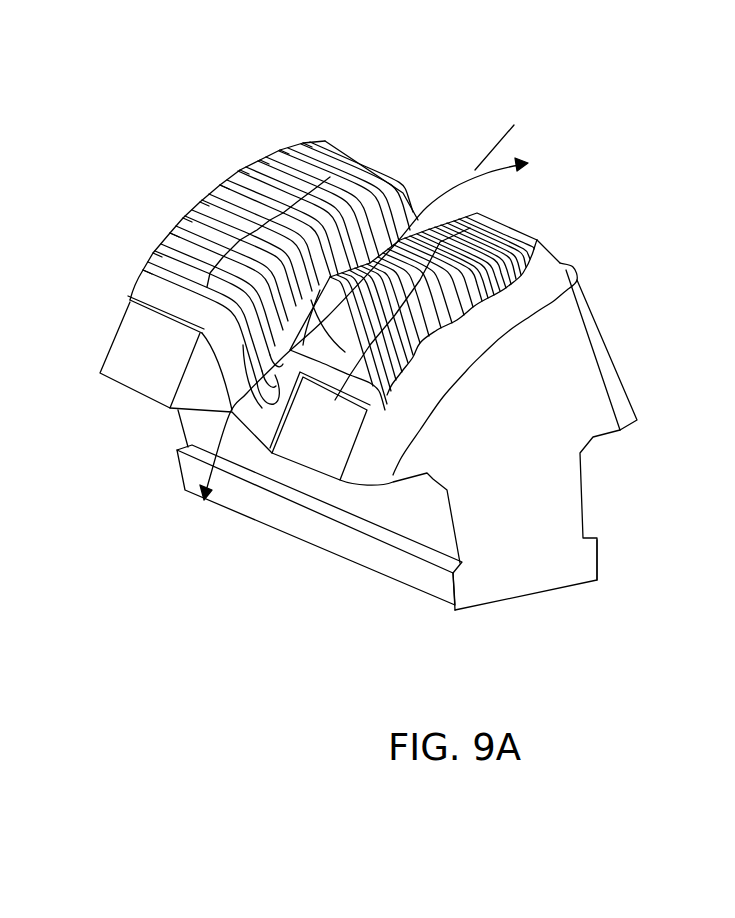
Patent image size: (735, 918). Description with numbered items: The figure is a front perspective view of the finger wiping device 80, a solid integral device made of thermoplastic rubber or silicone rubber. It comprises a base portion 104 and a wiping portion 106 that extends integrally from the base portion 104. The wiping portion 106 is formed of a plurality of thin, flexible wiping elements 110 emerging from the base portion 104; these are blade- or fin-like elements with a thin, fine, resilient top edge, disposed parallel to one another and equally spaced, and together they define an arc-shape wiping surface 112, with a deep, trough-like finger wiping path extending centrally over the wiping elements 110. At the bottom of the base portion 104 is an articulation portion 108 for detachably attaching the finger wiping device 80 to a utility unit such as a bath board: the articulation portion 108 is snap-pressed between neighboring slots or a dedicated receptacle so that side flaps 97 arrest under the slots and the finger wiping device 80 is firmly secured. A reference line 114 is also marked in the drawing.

The finger wiping device 80 is at (620, 213).
The side flaps 97 is at (448, 608).
The base portion 104 is at (557, 468).
The wiping portion 106 is at (470, 342).
The articulation portion 108 is at (477, 527).
The wiping elements 110 is at (502, 285).
The arc-shape wiping surface 112 is at (273, 180).
The rib junction line 114 is at (400, 192).